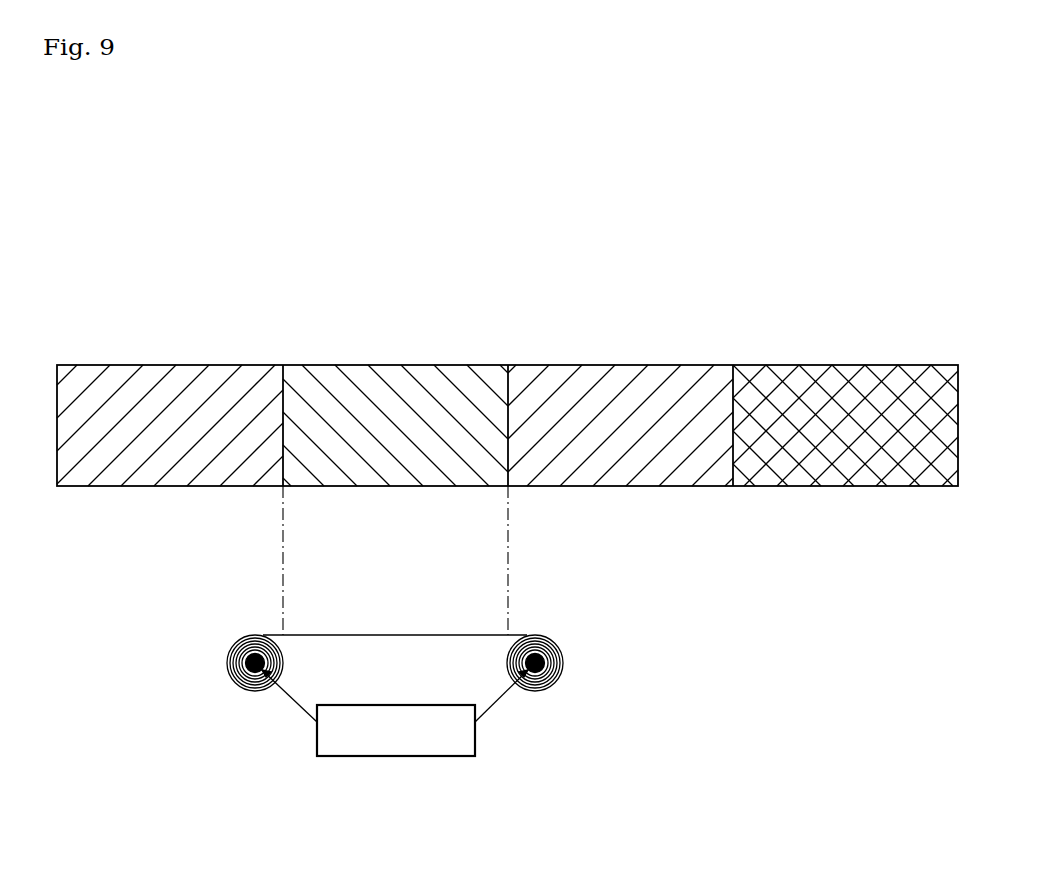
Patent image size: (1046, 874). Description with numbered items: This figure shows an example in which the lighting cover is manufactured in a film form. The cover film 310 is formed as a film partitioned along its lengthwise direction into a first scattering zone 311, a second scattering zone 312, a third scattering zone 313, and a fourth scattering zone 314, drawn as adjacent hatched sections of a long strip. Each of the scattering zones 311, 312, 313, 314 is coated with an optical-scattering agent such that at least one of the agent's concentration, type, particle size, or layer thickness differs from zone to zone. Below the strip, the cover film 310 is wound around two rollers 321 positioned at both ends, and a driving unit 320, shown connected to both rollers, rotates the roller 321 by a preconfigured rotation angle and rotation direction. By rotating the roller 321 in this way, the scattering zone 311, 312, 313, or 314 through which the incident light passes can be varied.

The cover film 310 is at (955, 274).
The first scattering zone 311 is at (230, 365).
The second scattering zone 312 is at (462, 365).
The third scattering zone 313 is at (686, 365).
The fourth scattering zone 314 is at (909, 365).
The driving unit 320 is at (397, 756).
The roller 321 is at (558, 640).